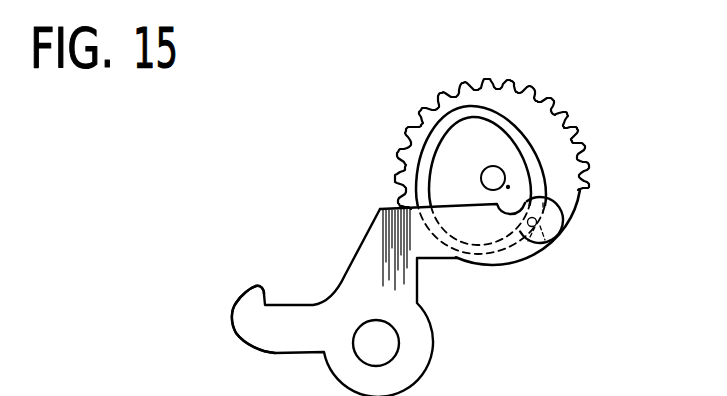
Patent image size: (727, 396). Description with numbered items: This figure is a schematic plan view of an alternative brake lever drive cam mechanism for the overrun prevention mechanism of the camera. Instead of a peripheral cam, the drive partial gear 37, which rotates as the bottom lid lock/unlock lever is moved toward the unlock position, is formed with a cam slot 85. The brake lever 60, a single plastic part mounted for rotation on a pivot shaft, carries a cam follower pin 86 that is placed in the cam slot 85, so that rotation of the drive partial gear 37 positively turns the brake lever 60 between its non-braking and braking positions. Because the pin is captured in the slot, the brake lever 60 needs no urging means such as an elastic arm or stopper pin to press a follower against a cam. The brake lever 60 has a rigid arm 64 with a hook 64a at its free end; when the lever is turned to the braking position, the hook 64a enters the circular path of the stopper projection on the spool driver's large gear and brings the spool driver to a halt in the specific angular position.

The drive partial gear 37 is at (580, 146).
The cam slot 85 is at (526, 161).
The brake lever 60 is at (322, 262).
The cam follower pin 86 is at (542, 255).
The hook 64a is at (249, 285).
The rigid arm 64 is at (282, 338).